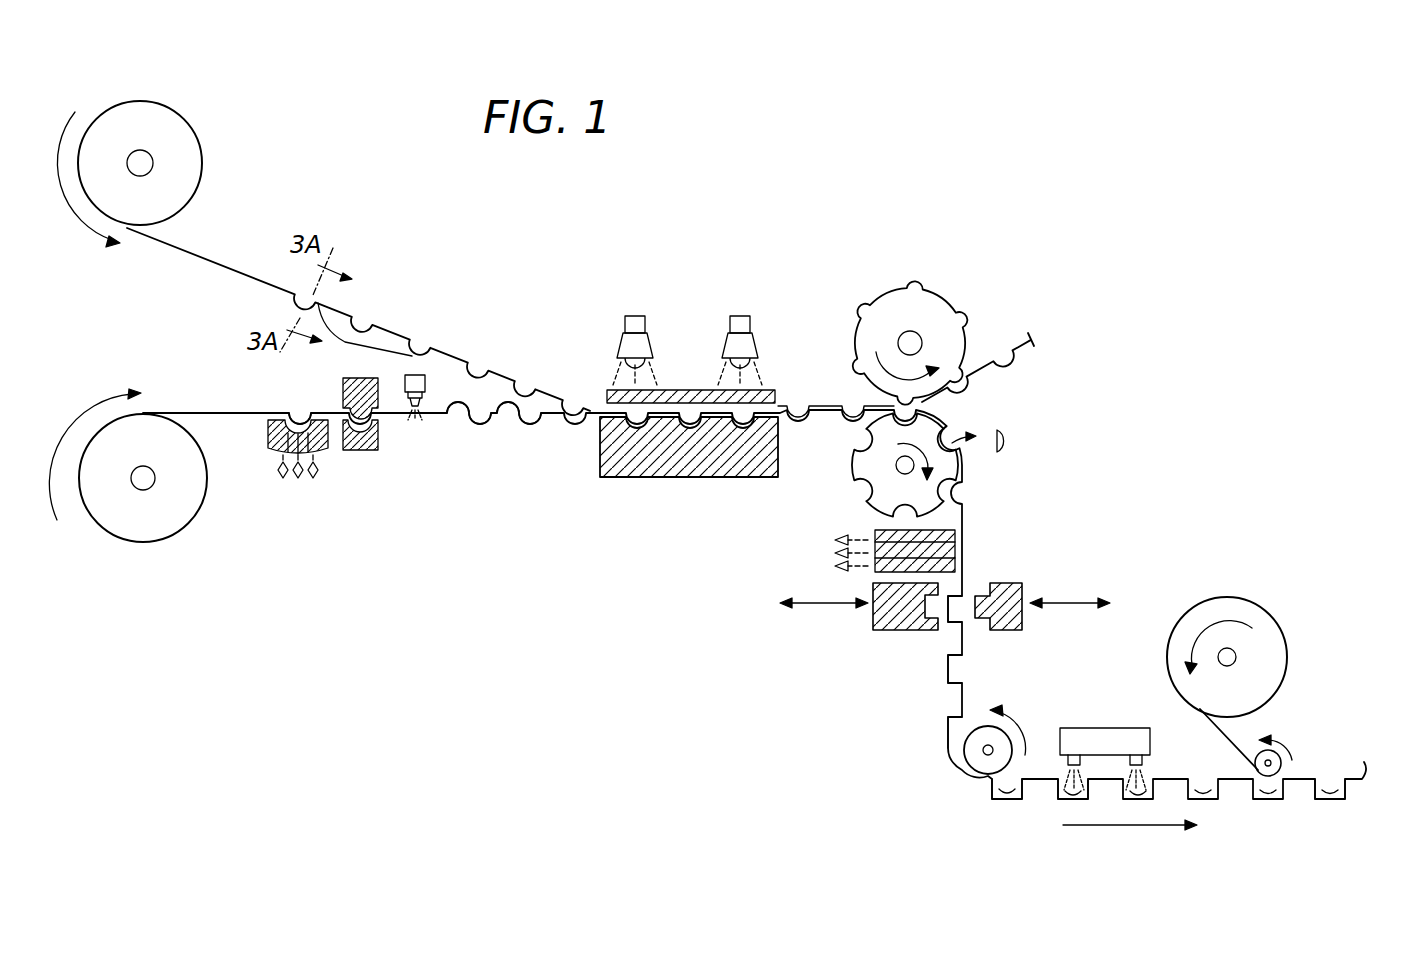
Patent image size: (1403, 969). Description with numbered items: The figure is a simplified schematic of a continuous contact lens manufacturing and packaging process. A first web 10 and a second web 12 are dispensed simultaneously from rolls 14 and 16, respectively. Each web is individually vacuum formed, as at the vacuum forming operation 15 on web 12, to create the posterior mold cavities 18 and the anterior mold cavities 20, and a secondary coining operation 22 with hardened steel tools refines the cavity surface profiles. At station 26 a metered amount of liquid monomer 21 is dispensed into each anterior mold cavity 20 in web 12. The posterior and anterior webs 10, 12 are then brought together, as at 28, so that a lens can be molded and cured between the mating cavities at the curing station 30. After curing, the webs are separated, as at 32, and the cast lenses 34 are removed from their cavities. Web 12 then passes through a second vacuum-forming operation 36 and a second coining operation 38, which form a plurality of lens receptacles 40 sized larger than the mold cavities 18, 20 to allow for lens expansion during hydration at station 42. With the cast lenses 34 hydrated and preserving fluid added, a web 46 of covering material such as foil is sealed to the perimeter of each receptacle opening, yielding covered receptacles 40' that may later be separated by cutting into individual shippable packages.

The first web of material 10 is at (219, 258).
The second web of material 12 is at (964, 480).
The roll 14 is at (157, 103).
The vacuum forming operation 15 is at (266, 445).
The roll 16 is at (152, 542).
The posterior mold cavities 18 is at (410, 352).
The anterior mold cavities 20 is at (298, 420).
The liquid monomer 21 is at (500, 425).
The secondary coining operation 22 is at (380, 440).
The station 26 is at (425, 383).
The web joining location 28 is at (586, 432).
The curing station 30 is at (777, 318).
The web separation location 32 is at (968, 406).
The cast lenses 34 is at (998, 438).
The second vacuum-forming operation 36 is at (872, 530).
The second coining operation 38 is at (1003, 631).
The lens receptacles 40 is at (1017, 708).
The covered receptacles 40' is at (1346, 744).
The hydration station 42 is at (1088, 727).
The web of covering material 46 is at (1222, 742).